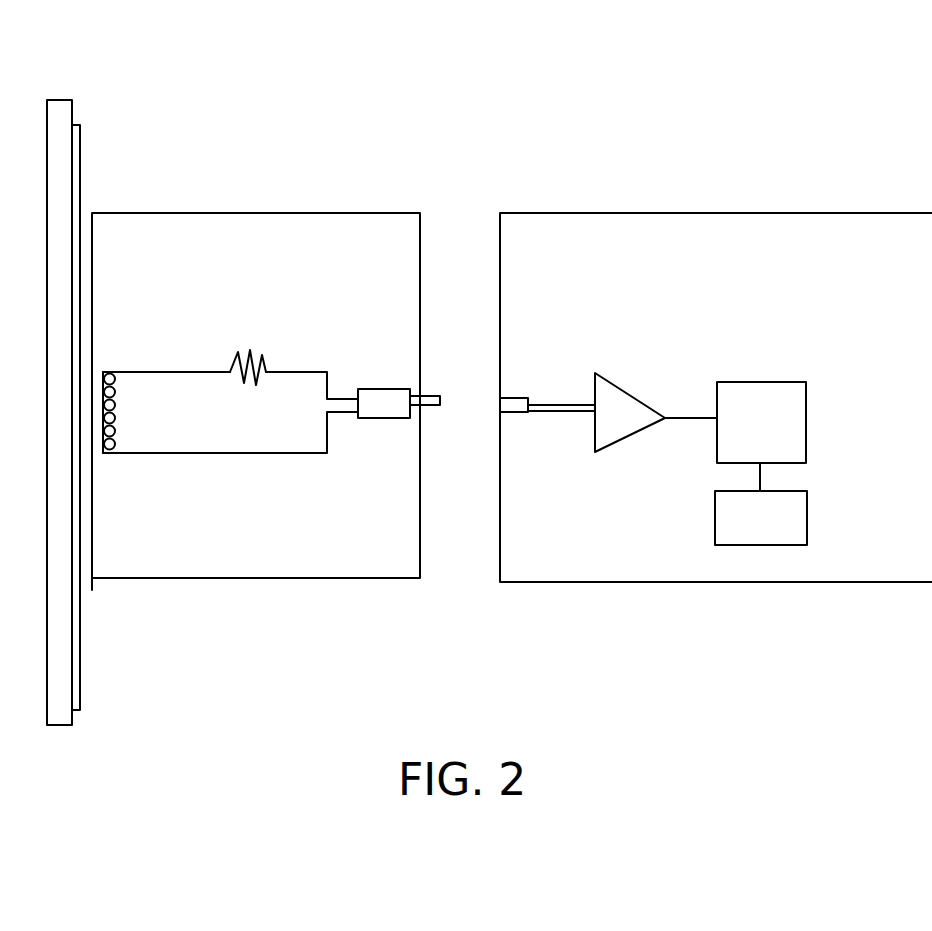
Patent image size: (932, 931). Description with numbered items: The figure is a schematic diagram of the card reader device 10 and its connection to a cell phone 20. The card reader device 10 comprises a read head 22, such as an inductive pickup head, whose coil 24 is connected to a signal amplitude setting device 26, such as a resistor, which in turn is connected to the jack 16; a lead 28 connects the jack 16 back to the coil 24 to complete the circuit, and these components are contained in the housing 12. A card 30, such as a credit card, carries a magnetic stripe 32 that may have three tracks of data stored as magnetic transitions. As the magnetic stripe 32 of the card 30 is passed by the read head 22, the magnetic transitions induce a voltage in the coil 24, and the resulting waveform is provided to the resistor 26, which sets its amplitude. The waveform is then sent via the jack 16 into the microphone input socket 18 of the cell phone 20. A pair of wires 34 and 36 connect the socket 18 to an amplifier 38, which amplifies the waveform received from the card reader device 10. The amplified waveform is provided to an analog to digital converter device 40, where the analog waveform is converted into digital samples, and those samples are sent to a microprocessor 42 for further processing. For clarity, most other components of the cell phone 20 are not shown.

The card reader device 10 is at (243, 203).
The housing 12 is at (358, 213).
The jack 16 is at (392, 402).
The microphone input socket 18 is at (517, 398).
The cell phone 20 is at (707, 213).
The read head 22 is at (121, 363).
The coil 24 is at (113, 420).
The signal amplitude setting device 26 is at (248, 345).
The lead 28 is at (255, 460).
The card 30 is at (60, 722).
The magnetic stripe 32 is at (82, 157).
The wire 34 is at (559, 404).
The wire 36 is at (555, 413).
The amplifier 38 is at (620, 380).
The analog to digital converter device 40 is at (760, 382).
The microprocessor 42 is at (807, 518).